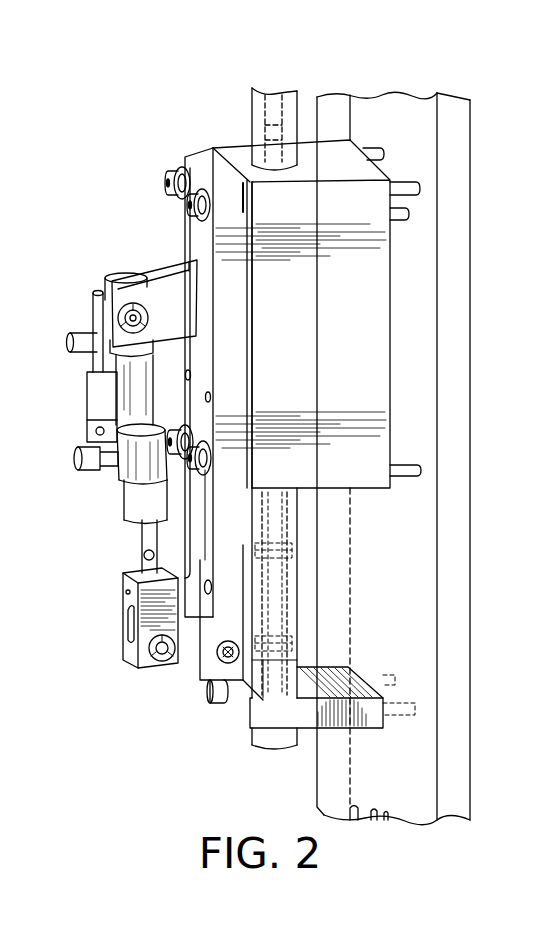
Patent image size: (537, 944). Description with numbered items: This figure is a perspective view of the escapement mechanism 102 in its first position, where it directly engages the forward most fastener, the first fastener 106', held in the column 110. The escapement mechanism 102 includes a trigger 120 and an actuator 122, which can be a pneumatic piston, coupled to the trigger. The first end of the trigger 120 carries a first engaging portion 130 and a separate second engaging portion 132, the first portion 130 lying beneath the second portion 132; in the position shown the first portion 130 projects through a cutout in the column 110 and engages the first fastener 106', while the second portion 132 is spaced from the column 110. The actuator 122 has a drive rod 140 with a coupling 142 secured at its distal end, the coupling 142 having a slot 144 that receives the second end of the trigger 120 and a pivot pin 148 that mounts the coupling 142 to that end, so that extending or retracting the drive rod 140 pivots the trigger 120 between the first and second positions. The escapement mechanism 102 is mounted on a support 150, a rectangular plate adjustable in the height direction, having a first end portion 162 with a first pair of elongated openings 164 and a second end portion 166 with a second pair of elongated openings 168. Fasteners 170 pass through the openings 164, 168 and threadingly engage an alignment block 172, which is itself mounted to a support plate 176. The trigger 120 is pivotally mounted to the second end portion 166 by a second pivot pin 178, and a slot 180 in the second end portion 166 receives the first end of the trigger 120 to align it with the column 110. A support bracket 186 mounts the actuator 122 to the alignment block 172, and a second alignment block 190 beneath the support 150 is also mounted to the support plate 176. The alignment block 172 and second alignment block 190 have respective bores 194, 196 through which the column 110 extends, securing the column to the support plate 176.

The escapement mechanism 102 is at (283, 416).
The first fastener 106' is at (334, 660).
The column 110 is at (293, 578).
The trigger 120 is at (183, 658).
The actuator 122 is at (122, 510).
The first engaging portion 130 is at (247, 683).
The second engaging portion 132 is at (240, 615).
The drive rod 140 is at (140, 541).
The coupling 142 is at (127, 615).
The slot 144 is at (130, 635).
The pivot pin 148 is at (162, 658).
The support 150 is at (318, 416).
The first end portion 162 is at (230, 222).
The first pair of elongated openings 164 is at (183, 227).
The second end portion 166 is at (222, 620).
The second pair of elongated openings 168 is at (208, 512).
The fasteners 170 is at (177, 170).
The alignment block 172 is at (380, 305).
The support plate 176 is at (456, 345).
The second pivot pin 178 is at (242, 647).
The slot 180 is at (198, 587).
The support bracket 186 is at (180, 302).
The second alignment block 190 is at (352, 676).
The bore 194 is at (298, 160).
The bore 196 is at (300, 662).